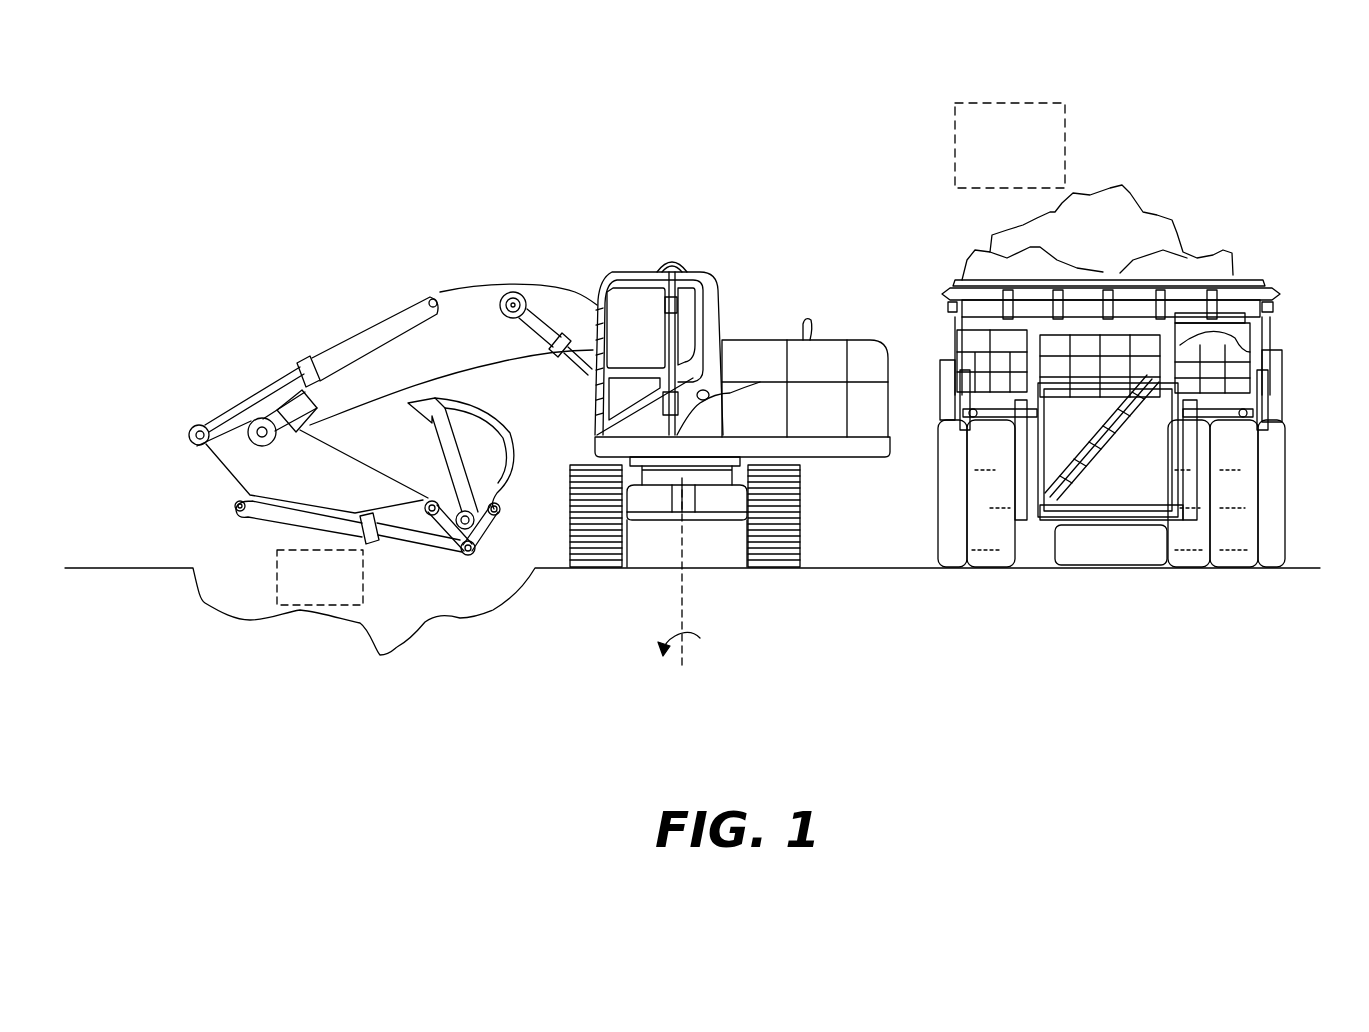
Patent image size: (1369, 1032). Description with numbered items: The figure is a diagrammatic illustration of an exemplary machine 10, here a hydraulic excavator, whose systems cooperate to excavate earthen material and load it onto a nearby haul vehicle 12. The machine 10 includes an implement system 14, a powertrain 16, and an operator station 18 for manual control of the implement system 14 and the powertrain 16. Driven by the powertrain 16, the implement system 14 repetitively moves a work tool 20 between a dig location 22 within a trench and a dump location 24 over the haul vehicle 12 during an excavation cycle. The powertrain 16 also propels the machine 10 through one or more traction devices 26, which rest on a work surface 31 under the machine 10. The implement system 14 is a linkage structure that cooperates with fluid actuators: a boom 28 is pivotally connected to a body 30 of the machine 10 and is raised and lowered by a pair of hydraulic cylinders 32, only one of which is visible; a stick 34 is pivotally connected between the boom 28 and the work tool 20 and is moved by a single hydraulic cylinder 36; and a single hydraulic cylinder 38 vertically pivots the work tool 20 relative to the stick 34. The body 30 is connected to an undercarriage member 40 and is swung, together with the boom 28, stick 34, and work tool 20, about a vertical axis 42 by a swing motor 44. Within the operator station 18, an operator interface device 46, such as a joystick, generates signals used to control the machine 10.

The machine 10 is at (779, 247).
The haul vehicle 12 is at (1288, 280).
The implement system 14 is at (133, 242).
The powertrain 16 is at (815, 393).
The operator station 18 is at (625, 292).
The work tool 20 is at (475, 465).
The dig location 22 is at (277, 570).
The dump location 24 is at (1066, 140).
The traction devices 26 is at (790, 533).
The boom 28 is at (438, 357).
The body 30 is at (862, 462).
The work surface 31 is at (871, 570).
The hydraulic cylinders 32 is at (569, 358).
The stick 34 is at (308, 490).
The hydraulic cylinder 36 is at (330, 353).
The hydraulic cylinder 38 is at (250, 518).
The undercarriage member 40 is at (722, 507).
The vertical axis 42 is at (682, 603).
The swing motor 44 is at (653, 473).
The operator interface device 46 is at (622, 352).